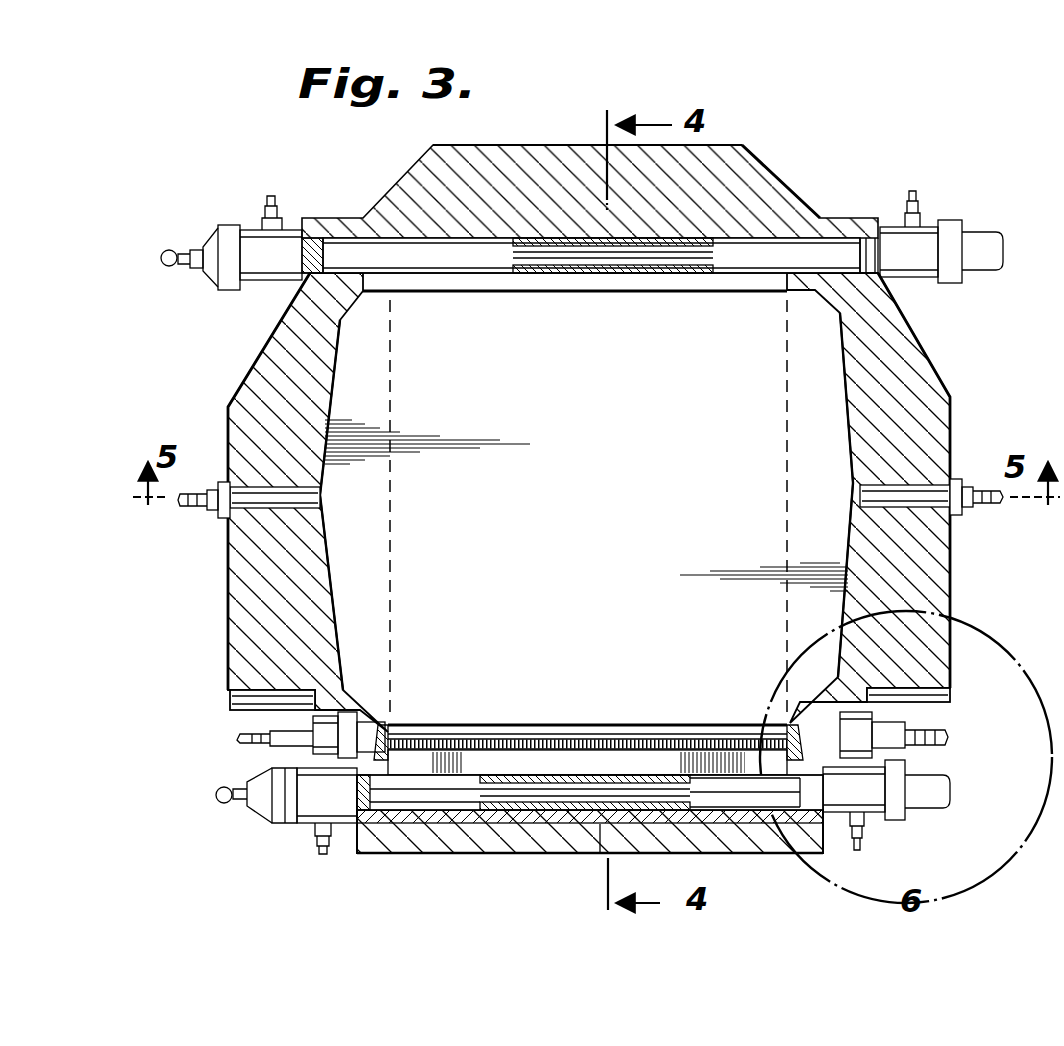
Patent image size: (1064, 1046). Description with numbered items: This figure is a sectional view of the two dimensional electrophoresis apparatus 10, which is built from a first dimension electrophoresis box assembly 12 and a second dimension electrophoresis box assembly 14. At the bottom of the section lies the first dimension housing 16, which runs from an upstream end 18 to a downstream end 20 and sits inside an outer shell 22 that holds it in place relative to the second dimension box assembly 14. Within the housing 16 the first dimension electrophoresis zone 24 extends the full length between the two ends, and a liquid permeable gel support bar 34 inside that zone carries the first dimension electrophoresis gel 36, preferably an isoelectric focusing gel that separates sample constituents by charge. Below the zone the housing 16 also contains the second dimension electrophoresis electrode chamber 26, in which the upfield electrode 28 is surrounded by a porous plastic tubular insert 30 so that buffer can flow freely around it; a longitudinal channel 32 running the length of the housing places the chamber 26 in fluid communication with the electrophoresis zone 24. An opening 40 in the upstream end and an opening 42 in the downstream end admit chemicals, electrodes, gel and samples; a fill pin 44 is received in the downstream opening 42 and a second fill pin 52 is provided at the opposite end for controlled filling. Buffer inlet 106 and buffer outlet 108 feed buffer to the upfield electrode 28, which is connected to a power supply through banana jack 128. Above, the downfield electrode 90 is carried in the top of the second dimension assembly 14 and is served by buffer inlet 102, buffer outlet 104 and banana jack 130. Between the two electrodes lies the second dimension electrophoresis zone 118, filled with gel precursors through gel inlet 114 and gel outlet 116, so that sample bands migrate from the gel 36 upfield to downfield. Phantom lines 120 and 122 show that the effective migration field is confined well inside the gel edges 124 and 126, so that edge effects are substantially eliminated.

The two dimensional electrophoresis apparatus 10 is at (806, 160).
The first dimension electrophoresis box assembly 12 is at (357, 840).
The second dimension electrophoresis box assembly 14 is at (925, 355).
The first dimension housing 16 is at (455, 820).
The upstream end 18 is at (388, 812).
The downstream end 20 is at (815, 840).
The outer shell 22 is at (598, 835).
The first dimension electrophoresis zone 24 is at (490, 740).
The second dimension electrophoresis electrode chamber 26 is at (525, 808).
The electrode 28 is at (762, 850).
The porous plastic tubular insert 30 is at (645, 810).
The longitudinal channel 32 is at (620, 768).
The liquid permeable gel support bar 34 is at (662, 745).
The first dimension electrophoresis gel 36 is at (580, 738).
The opening 40 is at (390, 740).
The opening 42 is at (790, 730).
The fill pin 44 is at (895, 728).
The second fill pin 52 is at (340, 715).
The downfield electrode 90 is at (548, 232).
The buffer inlet 102 is at (920, 195).
The buffer outlet 104 is at (276, 205).
The buffer inlet 106 is at (865, 838).
The buffer outlet 108 is at (318, 843).
The gel inlet 114 is at (990, 512).
The gel outlet 116 is at (190, 508).
The second dimension electrophoresis zone 118 is at (586, 505).
The phantom line 120 is at (392, 397).
The phantom line 122 is at (787, 443).
The edge of second dimension electrophoresis gel 124 is at (335, 378).
The edge of second dimension electrophoresis gel 126 is at (850, 458).
The banana jack 128 is at (235, 790).
The banana jack 130 is at (182, 250).